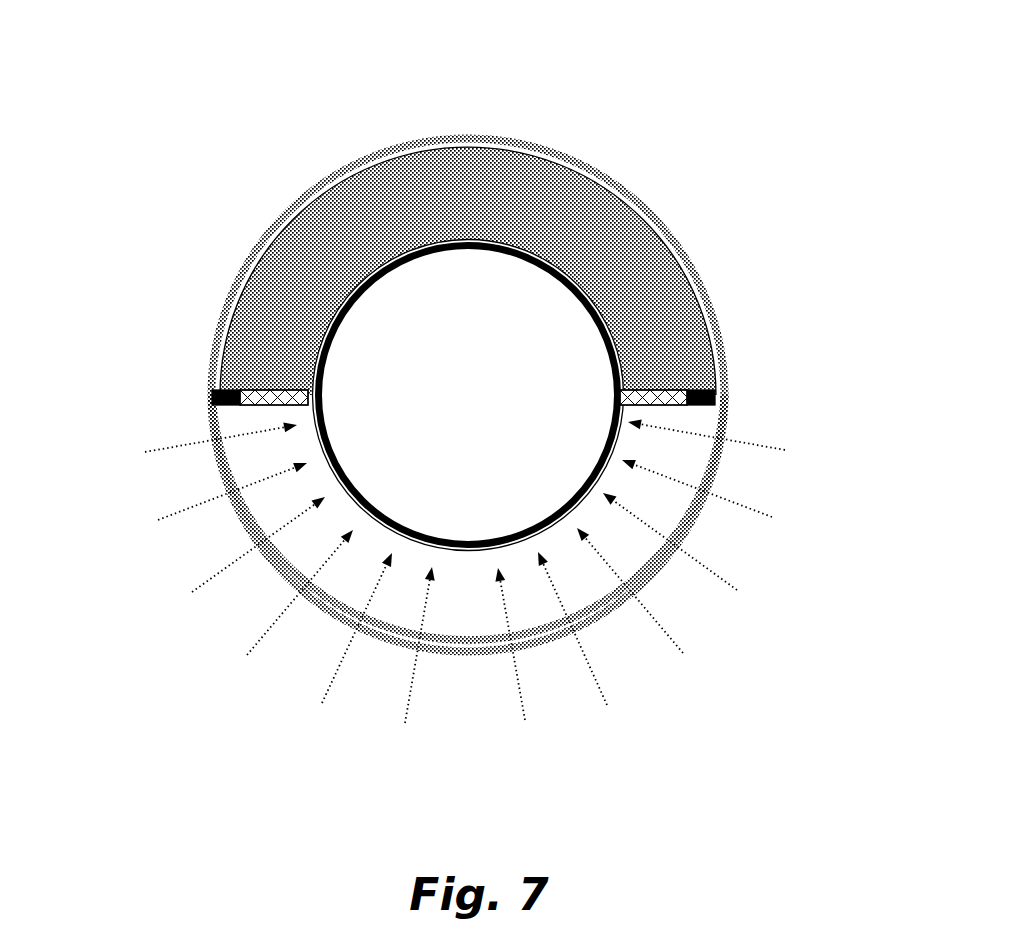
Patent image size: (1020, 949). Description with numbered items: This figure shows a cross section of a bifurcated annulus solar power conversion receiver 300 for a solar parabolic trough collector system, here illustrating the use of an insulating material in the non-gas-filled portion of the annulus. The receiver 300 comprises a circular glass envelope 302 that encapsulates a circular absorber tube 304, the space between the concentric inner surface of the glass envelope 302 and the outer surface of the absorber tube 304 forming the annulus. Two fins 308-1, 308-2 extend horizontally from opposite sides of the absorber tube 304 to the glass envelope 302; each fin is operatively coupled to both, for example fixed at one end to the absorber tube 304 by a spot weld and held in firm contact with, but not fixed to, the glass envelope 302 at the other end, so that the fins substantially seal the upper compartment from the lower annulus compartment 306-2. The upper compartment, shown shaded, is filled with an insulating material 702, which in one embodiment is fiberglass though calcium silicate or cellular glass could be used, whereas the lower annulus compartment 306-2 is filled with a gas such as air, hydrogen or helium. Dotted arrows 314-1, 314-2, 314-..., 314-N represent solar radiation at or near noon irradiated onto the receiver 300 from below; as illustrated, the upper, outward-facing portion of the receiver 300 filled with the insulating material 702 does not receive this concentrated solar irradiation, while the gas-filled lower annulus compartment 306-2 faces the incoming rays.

The solar power conversion receiver 300 is at (472, 27).
The glass envelope 302 is at (289, 192).
The absorber tube 304 is at (569, 483).
The lower annulus compartment 306-2 is at (500, 624).
The fin 308-1 is at (248, 408).
The fin 308-2 is at (686, 405).
The arrow representing solar radiation 314-1 is at (156, 534).
The arrow representing solar radiation 314-2 is at (212, 694).
The arrows representing solar radiation 314-... is at (358, 761).
The arrow representing solar radiation 314-N is at (798, 466).
The insulating material 702 is at (602, 240).